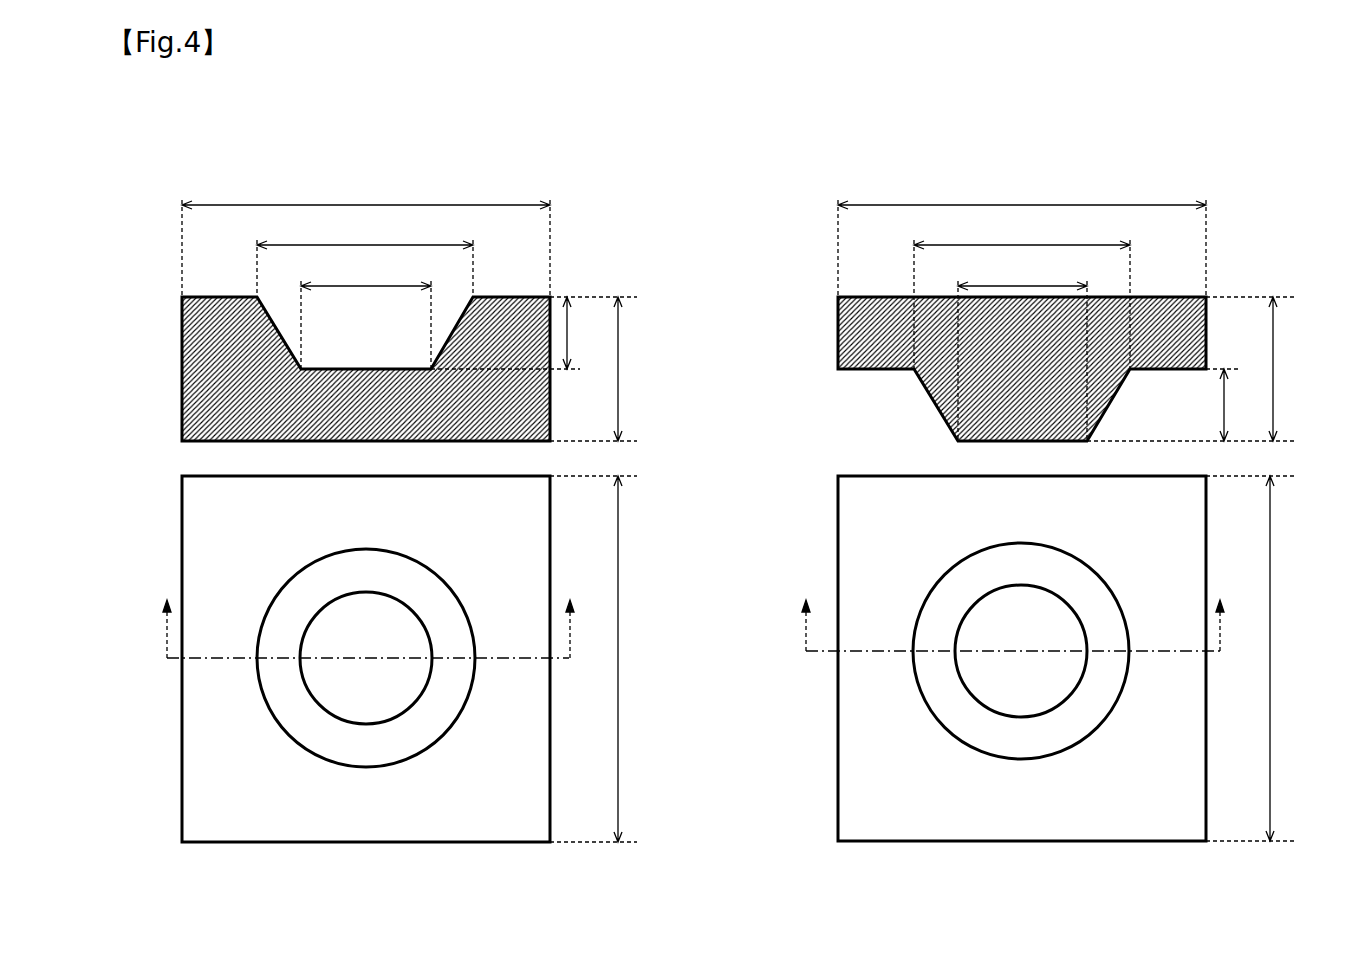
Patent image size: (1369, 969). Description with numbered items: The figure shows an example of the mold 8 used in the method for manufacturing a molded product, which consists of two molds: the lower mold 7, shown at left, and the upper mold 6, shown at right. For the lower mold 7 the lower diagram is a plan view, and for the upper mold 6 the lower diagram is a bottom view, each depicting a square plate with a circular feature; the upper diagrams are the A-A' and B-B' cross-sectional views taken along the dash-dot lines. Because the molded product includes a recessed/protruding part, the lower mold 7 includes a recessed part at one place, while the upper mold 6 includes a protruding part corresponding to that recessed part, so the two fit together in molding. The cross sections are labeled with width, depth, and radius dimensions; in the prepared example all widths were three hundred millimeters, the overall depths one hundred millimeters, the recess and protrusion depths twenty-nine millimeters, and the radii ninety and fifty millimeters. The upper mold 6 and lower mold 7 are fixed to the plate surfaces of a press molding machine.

The lower mold 7 is at (512, 149).
The upper mold 6 is at (1010, 139).
The mold 8 is at (540, 835).